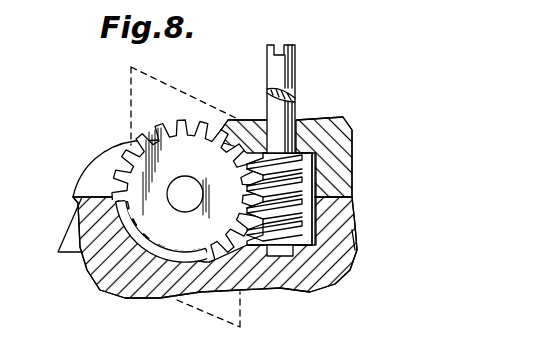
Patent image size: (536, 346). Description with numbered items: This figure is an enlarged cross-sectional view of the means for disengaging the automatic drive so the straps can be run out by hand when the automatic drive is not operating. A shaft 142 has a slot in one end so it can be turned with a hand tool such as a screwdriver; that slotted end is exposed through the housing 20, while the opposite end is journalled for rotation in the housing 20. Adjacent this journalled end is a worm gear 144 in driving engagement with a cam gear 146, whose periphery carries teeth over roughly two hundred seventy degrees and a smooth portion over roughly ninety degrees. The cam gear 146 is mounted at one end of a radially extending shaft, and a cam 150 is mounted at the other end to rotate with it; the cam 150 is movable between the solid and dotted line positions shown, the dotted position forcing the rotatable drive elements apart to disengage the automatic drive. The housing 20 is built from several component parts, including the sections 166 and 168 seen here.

The housing 20 is at (338, 114).
The shaft 142 is at (290, 63).
The worm gear 144 is at (310, 219).
The cam gear 146 is at (175, 124).
The cam 150 is at (208, 100).
The housing component part 166 is at (342, 173).
The housing component part 168 is at (374, 264).